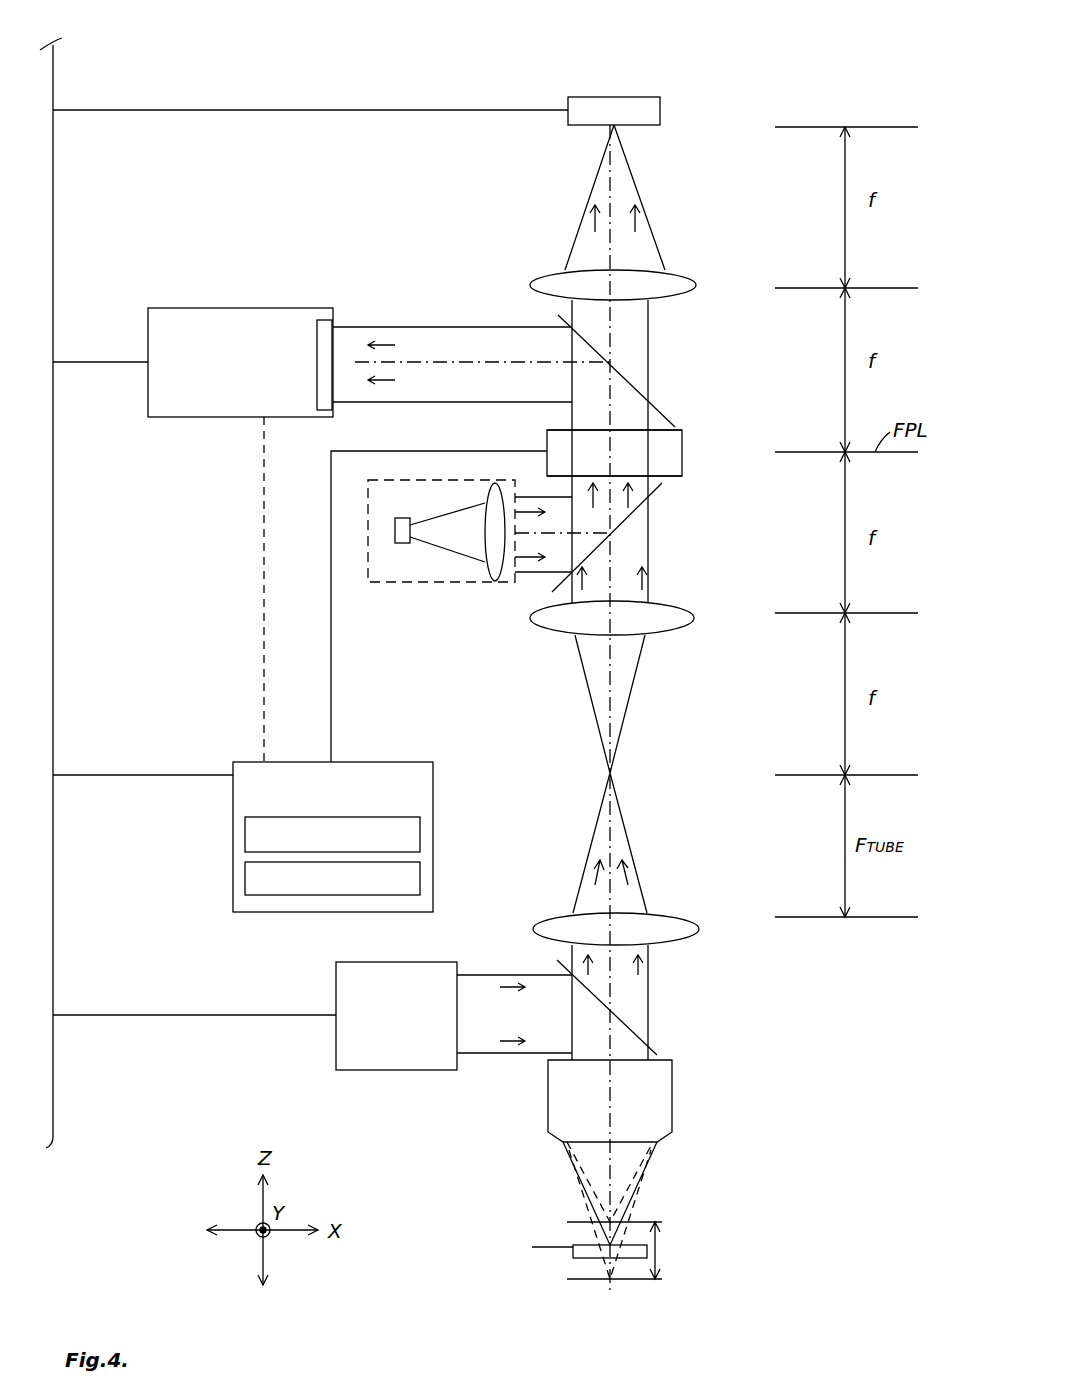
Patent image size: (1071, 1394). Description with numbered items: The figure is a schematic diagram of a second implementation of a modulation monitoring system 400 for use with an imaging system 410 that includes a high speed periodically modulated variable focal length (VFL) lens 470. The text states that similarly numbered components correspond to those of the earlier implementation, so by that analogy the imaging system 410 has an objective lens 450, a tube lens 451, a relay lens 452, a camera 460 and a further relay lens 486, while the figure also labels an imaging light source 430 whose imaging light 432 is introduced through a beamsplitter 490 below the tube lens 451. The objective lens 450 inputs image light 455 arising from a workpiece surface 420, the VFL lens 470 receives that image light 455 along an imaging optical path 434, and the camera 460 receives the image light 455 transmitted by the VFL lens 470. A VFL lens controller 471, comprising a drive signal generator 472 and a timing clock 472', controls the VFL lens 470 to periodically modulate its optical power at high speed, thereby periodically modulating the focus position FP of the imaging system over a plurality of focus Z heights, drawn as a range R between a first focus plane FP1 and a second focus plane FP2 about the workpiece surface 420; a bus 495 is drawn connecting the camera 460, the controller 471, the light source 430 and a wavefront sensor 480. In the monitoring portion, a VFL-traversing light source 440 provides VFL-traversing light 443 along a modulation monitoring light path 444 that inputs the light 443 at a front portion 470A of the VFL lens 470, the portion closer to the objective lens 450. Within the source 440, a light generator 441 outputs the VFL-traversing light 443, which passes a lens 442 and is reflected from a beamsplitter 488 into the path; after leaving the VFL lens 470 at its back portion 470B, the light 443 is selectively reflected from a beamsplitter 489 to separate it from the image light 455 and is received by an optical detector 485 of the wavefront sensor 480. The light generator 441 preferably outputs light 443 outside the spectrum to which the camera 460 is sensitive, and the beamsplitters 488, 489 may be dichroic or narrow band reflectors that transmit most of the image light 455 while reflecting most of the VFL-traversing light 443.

The modulation monitoring system 400 is at (424, 219).
The imaging system 410 is at (763, 27).
The workpiece 420 is at (573, 1252).
The imaging light source 430 is at (368, 962).
The imaging light 432 is at (518, 1040).
The optical axis 434 is at (612, 708).
The VFL-traversing light source 440 is at (462, 585).
The light generator 441 is at (400, 545).
The collimating lens 442 is at (490, 582).
The VFL-traversing light 443 is at (385, 375).
The modulation monitoring light path 444 is at (455, 368).
The objective lens 450 is at (673, 1090).
The tube lens 451 is at (696, 922).
The relay lens 452 is at (548, 627).
The image light 455 is at (598, 222).
The camera 460 is at (578, 126).
The VFL lens 470 is at (683, 450).
The front portion 470A is at (686, 482).
The back portion 470B is at (676, 422).
The lens controller 471 is at (368, 762).
The drive signal generator 472 is at (361, 836).
The timing clock 472' is at (373, 878).
The wavefront sensor 480 is at (245, 308).
The optical detector 485 is at (322, 320).
The relay lens 486 is at (696, 285).
The beamsplitter 488 is at (638, 520).
The beamsplitter 489 is at (632, 373).
The beam splitter 490 is at (636, 1035).
The signal and control bus 495 is at (62, 1100).
The focus position FP is at (545, 1247).
The first focus plane FP1 is at (650, 1222).
The second focus plane FP2 is at (645, 1280).
The focus range R is at (660, 1245).